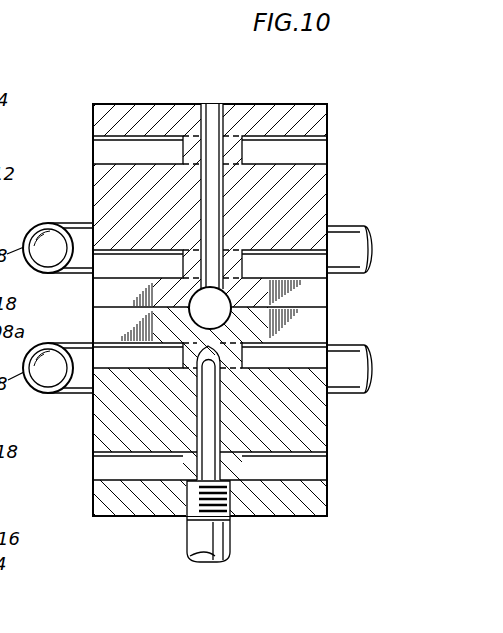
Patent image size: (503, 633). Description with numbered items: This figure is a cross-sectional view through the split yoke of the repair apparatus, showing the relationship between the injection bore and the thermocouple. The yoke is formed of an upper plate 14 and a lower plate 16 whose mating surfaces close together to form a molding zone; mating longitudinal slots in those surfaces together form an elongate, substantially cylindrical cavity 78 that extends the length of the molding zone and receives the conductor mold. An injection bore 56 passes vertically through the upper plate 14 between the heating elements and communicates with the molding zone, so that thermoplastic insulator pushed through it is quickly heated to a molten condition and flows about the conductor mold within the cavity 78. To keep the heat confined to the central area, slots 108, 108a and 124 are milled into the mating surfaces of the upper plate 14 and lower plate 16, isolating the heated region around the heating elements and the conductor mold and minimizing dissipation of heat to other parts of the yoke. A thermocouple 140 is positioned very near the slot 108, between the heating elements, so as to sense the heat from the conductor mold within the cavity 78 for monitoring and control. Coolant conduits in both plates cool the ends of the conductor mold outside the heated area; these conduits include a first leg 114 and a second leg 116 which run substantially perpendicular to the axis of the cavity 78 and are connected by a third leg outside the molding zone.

The upper plate 14 is at (323, 112).
The lower plate 16 is at (302, 505).
The injection bore 56 is at (208, 104).
The cylindrical cavity 78 is at (218, 312).
The slot 108 is at (122, 260).
The slot 108a is at (305, 353).
The first leg 114 is at (350, 228).
The second leg 116 is at (357, 393).
The slot 124 is at (318, 157).
The thermocouple 140 is at (208, 395).